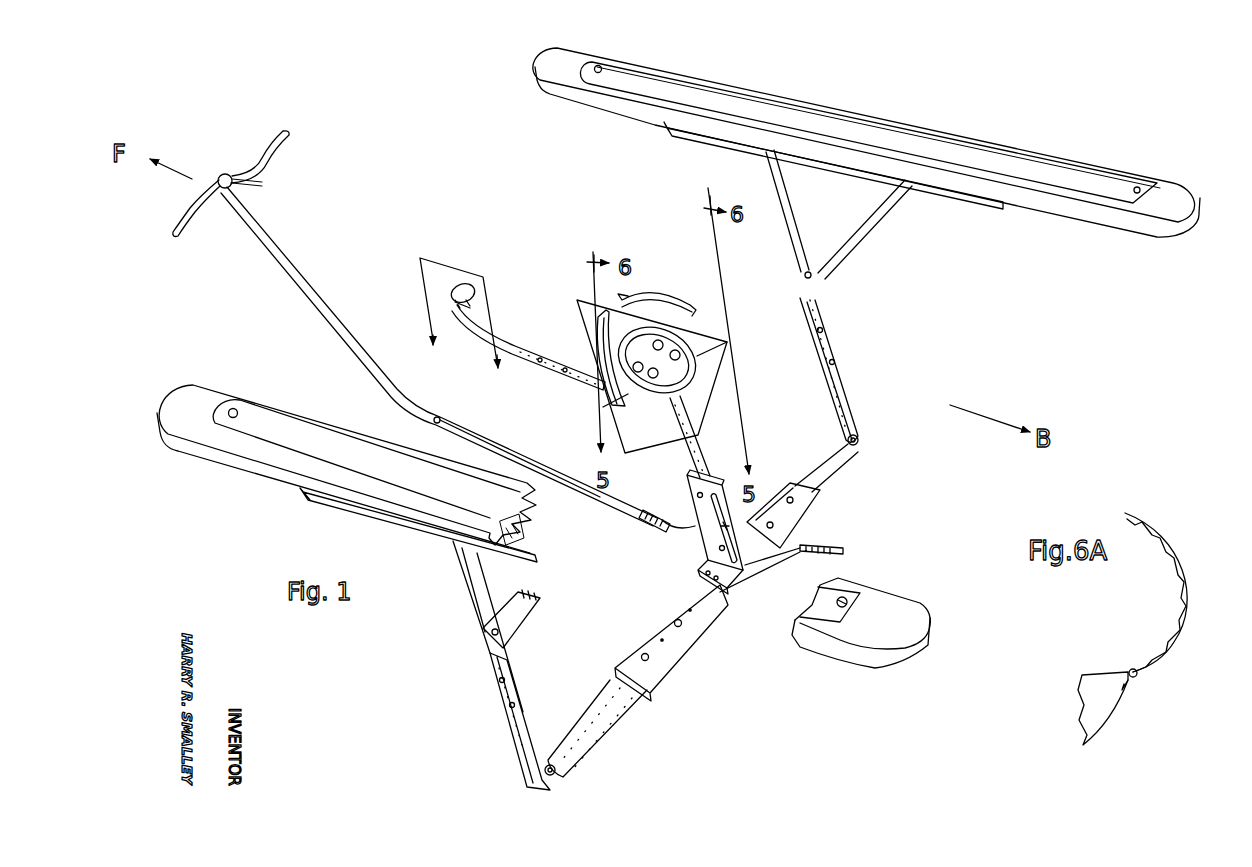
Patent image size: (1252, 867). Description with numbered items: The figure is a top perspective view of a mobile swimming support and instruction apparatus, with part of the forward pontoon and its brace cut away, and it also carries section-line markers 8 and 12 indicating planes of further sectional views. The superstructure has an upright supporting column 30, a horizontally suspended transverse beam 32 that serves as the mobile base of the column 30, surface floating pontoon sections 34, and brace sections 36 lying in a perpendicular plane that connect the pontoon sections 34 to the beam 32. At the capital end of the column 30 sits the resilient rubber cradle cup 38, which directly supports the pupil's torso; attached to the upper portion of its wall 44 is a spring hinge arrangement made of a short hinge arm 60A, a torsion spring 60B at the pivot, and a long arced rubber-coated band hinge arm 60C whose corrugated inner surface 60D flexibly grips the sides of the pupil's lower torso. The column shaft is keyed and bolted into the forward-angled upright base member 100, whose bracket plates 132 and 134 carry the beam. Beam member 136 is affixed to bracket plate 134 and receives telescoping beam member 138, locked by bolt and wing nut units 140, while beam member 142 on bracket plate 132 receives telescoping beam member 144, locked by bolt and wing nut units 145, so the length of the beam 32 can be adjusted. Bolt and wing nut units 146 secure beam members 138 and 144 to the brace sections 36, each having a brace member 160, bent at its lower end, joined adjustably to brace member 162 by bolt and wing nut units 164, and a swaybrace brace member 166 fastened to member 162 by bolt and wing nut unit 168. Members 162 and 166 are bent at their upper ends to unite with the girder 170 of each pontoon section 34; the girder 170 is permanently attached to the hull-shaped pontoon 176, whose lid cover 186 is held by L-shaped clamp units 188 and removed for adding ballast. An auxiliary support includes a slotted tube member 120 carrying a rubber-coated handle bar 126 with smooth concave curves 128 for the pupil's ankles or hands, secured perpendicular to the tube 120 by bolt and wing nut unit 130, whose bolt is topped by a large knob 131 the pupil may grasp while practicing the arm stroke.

In FIG. 1, the surface floating pontoon sections 34 is at (986, 130).
In FIG. 1, the lid cover 186 is at (735, 94).
In FIG. 1, the L shaped clamp units 188 is at (600, 65).
In FIG. 1, the pontoon 176 is at (1072, 212).
In FIG. 1, the girder 170 is at (951, 193).
In FIG. 1, the brace sections 36 is at (842, 330).
In FIG. 1, the brace member 162 is at (790, 202).
In FIG. 1, the brace member 160 is at (852, 400).
In FIG. 1, the bolt and wing nut units 164 is at (829, 363).
In FIG. 1, the brace member 166 is at (868, 213).
In FIG. 1, the bolt and wing nut unit 168 is at (804, 275).
In FIG. 1, the bolt and wing nut units 146 is at (860, 446).
In FIG. 1, the beam member 144 is at (838, 481).
In FIG. 1, the beam member 142 is at (799, 498).
In FIG. 1, the bolt and wing nut units 145 is at (790, 496).
In FIG. 1, the bracket plate 132 is at (760, 560).
In FIG. 1, the bracket plate 134 is at (706, 568).
In FIG. 1, the supporting column 30 is at (699, 381).
In FIG. 1, the foot pedal 8 is at (686, 313).
In FIG. 1, the pedal lever 12 is at (512, 328).
In FIG. 1, the tube member 120 is at (458, 359).
In FIG. 1, the upright base member 100 is at (695, 520).
In FIG. 1, the handle bar arrangement 126 is at (238, 173).
In FIG. 1, the smooth concave curves 128 is at (248, 168).
In FIG. 1, the bolt and wing nut unit 130 is at (240, 184).
In FIG. 1, the knob 131 is at (212, 169).
In FIG. 1, the transverse beam 32 is at (642, 681).
In FIG. 1, the beam member 136 is at (665, 672).
In FIG. 1, the bolt and wing nut units 140 is at (642, 653).
In FIG. 1, the beam member 138 is at (597, 740).
In FIG. 6A, the resilient cradle cup 38 is at (1152, 633).
In FIG. 6A, the wall 44 is at (1106, 717).
In FIG. 6A, the short hinge arm 60A is at (1127, 683).
In FIG. 6A, the torsion spring 60B is at (1138, 674).
In FIG. 6A, the arced hinge arm 60C is at (1188, 583).
In FIG. 6A, the inner surface 60D is at (1172, 620).